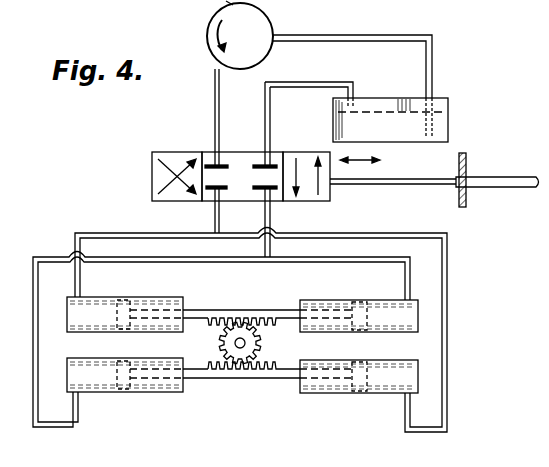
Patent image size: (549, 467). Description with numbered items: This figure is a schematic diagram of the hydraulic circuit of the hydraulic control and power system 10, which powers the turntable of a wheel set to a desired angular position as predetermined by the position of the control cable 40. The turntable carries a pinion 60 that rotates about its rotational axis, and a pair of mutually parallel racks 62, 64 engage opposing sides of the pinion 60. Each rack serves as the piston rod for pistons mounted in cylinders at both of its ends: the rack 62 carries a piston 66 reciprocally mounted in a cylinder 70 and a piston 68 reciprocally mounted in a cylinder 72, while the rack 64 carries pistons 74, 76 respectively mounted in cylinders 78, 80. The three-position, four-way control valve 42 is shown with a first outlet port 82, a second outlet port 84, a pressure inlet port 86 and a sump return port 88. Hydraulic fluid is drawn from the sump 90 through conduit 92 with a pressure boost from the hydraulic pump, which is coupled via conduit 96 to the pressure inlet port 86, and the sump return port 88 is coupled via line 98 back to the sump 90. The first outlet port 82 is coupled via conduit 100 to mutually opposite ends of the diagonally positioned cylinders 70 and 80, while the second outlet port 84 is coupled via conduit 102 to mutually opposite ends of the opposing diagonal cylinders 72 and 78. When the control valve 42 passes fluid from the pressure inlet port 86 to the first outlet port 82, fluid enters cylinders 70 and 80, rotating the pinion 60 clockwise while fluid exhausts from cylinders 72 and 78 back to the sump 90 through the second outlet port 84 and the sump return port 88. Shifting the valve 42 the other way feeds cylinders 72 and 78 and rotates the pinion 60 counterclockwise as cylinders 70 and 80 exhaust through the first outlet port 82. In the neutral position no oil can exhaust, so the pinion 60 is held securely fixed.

The hydraulic positioning system 10 is at (380, 7).
The control cable 40 is at (525, 176).
The three-position, four-way control valve 42 is at (161, 152).
The pinion 60 is at (262, 346).
The rack 62 is at (240, 310).
The rack 64 is at (240, 378).
The piston 66 is at (131, 301).
The piston 68 is at (356, 302).
The cylinder 70 is at (96, 304).
The cylinder 72 is at (378, 306).
The piston 74 is at (126, 392).
The piston 76 is at (353, 395).
The cylinder 78 is at (97, 393).
The cylinder 80 is at (388, 394).
The first outlet port 82 is at (213, 205).
The second outlet port 84 is at (271, 205).
The pressure inlet port 86 is at (214, 128).
The sump return port 88 is at (273, 122).
The sump 90 is at (449, 118).
The conduit 92 is at (343, 35).
The conduit 96 is at (220, 99).
The line 98 is at (312, 82).
The conduit 100 is at (122, 233).
The conduit 102 is at (404, 232).